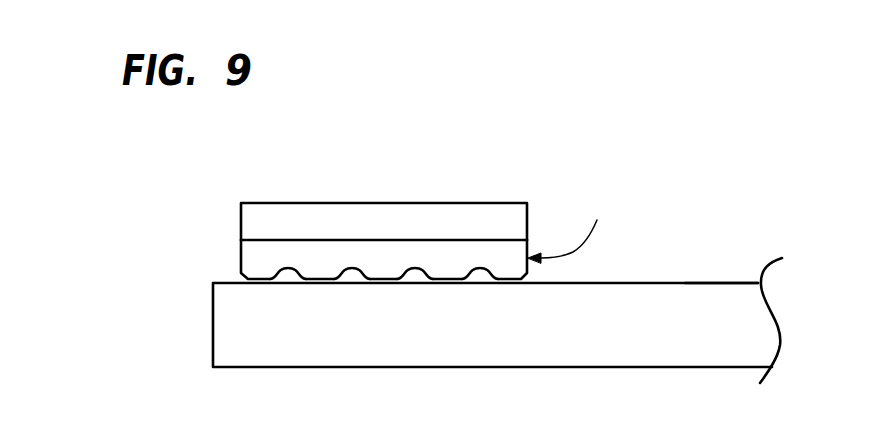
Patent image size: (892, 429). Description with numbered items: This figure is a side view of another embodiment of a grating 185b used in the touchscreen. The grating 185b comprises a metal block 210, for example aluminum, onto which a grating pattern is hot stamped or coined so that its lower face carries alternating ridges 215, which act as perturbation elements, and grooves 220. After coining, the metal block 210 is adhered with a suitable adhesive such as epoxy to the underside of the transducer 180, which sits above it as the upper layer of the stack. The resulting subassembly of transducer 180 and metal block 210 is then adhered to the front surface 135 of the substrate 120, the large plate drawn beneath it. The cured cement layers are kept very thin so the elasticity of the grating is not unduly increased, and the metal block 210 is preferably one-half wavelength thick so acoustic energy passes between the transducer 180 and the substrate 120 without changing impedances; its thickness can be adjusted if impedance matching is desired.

The substrate 120 is at (448, 352).
The front surface 135 is at (685, 283).
The transducer 180 is at (367, 215).
The grating 185b is at (578, 229).
The metal block 210 is at (250, 258).
The ridges 215 is at (385, 278).
The grooves 220 is at (353, 270).